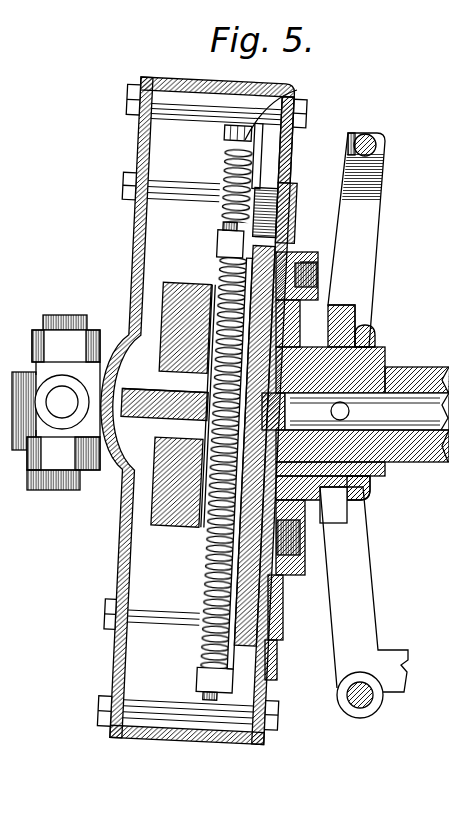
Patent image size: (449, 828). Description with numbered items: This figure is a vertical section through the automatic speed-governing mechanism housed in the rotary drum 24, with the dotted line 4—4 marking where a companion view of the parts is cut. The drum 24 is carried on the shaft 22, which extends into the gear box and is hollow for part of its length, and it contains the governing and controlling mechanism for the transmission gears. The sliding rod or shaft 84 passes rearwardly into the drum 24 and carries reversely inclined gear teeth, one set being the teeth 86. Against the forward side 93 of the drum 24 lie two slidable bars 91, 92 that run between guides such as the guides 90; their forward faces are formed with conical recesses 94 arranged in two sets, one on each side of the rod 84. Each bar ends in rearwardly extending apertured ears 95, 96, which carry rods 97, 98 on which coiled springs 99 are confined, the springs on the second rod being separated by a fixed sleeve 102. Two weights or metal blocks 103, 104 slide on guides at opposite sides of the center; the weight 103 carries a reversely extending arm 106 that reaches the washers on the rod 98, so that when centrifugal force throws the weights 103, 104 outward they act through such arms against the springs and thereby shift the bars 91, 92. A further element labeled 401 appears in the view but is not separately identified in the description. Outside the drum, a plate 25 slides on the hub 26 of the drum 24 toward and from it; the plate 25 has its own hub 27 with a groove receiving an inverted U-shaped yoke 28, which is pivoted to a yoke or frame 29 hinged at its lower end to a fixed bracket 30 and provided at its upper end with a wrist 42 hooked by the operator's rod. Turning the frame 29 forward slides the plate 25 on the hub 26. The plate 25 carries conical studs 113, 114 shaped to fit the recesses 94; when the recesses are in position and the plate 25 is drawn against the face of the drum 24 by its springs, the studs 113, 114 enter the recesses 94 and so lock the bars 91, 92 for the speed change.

The section line 4— 4 is at (154, 74).
The shaft 22 is at (412, 457).
The rotary drum 24 is at (196, 424).
The plate 25 is at (321, 197).
The hub 26 is at (382, 352).
The hub 27 is at (370, 493).
The yoke 28 is at (355, 305).
The yoke or frame 29 is at (377, 215).
The fixed bracket 30 is at (387, 677).
The wrist 42 is at (387, 123).
The rod or shaft 84 is at (367, 414).
The gear teeth 86 is at (118, 467).
The guides 90 is at (268, 187).
The slidable bar 91 is at (292, 140).
The slidable bar 92 is at (281, 643).
The forward side of the drum 93 is at (276, 677).
The conical recesses 94 is at (294, 258).
The apertured ear 95 is at (227, 133).
The apertured ear 96 is at (222, 248).
The rod 97 is at (297, 90).
The rod 98 is at (222, 228).
The coiled springs 99 is at (225, 162).
The fixed sleeve 102 is at (213, 470).
The weight or metal block 103 is at (196, 284).
The weight or metal block 104 is at (177, 527).
The arm 106 is at (205, 317).
The conical stud 113 is at (307, 260).
The conical stud 114 is at (302, 532).
The pivot pin 401 is at (158, 392).